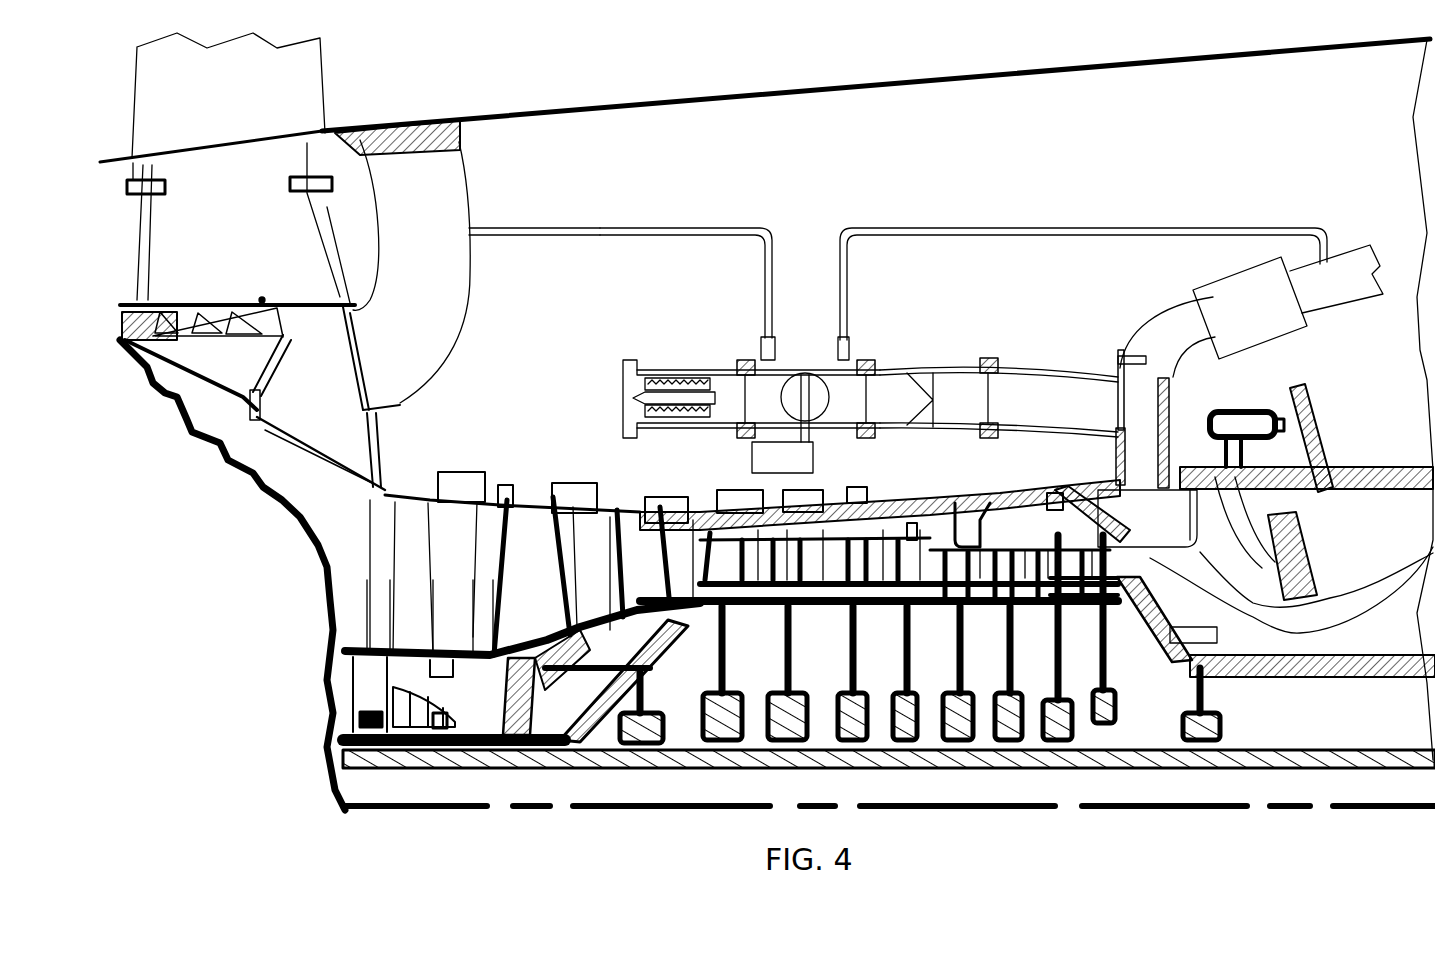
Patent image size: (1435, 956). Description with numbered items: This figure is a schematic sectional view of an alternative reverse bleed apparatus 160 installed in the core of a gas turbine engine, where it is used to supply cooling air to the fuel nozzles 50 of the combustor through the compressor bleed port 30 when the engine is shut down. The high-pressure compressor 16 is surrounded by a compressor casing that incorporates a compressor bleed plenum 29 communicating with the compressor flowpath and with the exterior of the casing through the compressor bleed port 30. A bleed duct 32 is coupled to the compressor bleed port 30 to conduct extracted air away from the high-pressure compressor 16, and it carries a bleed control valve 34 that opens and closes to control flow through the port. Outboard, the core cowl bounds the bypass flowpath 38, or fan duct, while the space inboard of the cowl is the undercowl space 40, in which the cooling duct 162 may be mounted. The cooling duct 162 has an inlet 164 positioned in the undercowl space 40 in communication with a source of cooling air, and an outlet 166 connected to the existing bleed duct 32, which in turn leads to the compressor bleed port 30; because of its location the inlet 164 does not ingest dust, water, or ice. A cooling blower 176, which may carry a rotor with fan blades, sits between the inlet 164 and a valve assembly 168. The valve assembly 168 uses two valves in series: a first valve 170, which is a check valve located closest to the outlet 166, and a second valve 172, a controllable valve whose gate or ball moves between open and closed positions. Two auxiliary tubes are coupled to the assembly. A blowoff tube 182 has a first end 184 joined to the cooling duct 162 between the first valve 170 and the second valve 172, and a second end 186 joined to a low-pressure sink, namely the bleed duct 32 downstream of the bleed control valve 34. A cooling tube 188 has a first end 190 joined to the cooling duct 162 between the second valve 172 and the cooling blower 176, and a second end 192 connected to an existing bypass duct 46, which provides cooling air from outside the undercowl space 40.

The bypass flowpath 38 is at (1320, 22).
The undercowl space 40 is at (1320, 111).
The bypass duct 46 is at (460, 176).
The reverse bleed apparatus 160 is at (858, 181).
The second end 192 is at (478, 235).
The tube 188 is at (594, 232).
The tube 182 is at (1096, 232).
The second end 186 is at (1328, 250).
The bleed control valve 34 is at (1263, 324).
The valve assembly 168 is at (896, 330).
The inlet 164 is at (622, 372).
The cooling blower 176 is at (720, 393).
The first end 190 is at (762, 353).
The first end 184 is at (848, 350).
The second valve 172 is at (823, 393).
The first valve 170 is at (910, 373).
The cooling duct 162 is at (1030, 366).
The outlet 166 is at (1120, 384).
The bleed duct 32 is at (1168, 380).
The compressor bleed port 30 is at (1130, 488).
The compressor bleed plenum 29 is at (1178, 525).
The fuel nozzles 50 is at (1303, 543).
The high-pressure compressor 16 is at (530, 530).